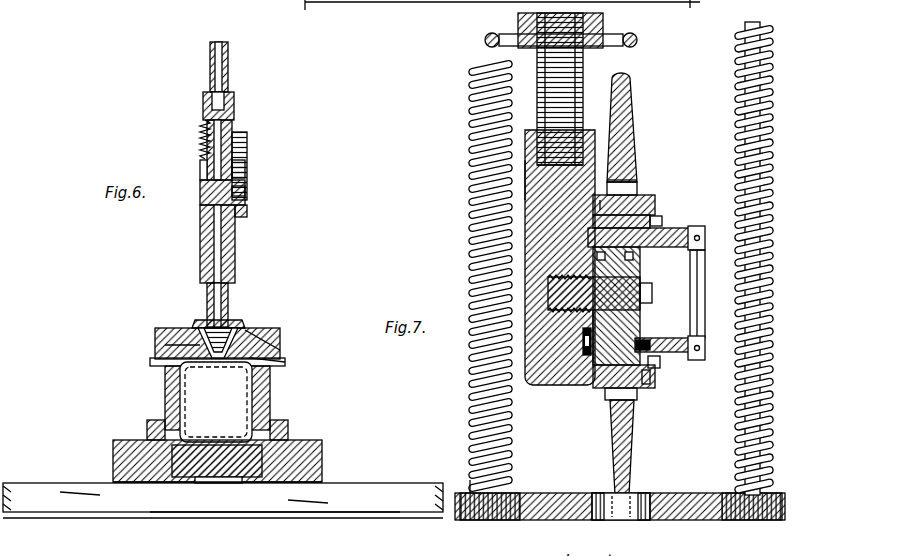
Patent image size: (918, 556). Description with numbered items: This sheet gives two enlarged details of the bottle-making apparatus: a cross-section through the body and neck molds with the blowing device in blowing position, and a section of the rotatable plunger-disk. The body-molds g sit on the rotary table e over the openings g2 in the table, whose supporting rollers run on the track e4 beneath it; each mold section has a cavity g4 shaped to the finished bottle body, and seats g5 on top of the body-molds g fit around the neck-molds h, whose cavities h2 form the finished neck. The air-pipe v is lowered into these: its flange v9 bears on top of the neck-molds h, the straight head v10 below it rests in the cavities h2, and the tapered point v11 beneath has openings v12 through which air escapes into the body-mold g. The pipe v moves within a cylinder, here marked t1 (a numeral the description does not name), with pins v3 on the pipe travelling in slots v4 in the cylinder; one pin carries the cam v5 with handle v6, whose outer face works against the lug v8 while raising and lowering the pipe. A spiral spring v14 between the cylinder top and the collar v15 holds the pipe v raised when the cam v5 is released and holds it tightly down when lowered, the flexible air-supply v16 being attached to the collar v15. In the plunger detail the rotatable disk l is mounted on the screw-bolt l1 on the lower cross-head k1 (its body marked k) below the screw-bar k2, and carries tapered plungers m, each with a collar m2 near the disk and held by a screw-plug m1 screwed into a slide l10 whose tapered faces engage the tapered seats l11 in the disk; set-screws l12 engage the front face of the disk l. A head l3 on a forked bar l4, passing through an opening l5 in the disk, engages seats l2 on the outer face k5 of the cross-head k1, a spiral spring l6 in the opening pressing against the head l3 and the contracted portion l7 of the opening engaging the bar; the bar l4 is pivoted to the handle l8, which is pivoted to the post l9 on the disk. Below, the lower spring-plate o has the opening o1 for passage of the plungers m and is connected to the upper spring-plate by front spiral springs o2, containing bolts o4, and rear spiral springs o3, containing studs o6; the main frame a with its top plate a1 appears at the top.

In FIG. 6, the flexible air-supply v16 is at (212, 52).
In FIG. 6, the collar v15 is at (235, 100).
In FIG. 6, the spiral spring v14 is at (203, 133).
In FIG. 6, the handle v6 is at (247, 143).
In FIG. 6, the slots v4 is at (203, 170).
In FIG. 6, the cam v5 is at (245, 192).
In FIG. 6, the pins v3 is at (247, 198).
In FIG. 6, the lug v8 is at (244, 217).
In FIG. 6, the valve body t1 is at (203, 256).
In FIG. 6, the air-pipe v is at (230, 297).
In FIG. 6, the straight face or head v10 is at (245, 325).
In FIG. 6, the neck-molds h is at (168, 330).
In FIG. 6, the flange v9 is at (200, 328).
In FIG. 6, the cavities h2 is at (282, 350).
In FIG. 6, the tapered point v11 is at (165, 347).
In FIG. 6, the seats g5 is at (285, 362).
In FIG. 6, the cavities g4 is at (268, 399).
In FIG. 6, the openings v12 is at (220, 370).
In FIG. 6, the body-molds g is at (118, 440).
In FIG. 6, the rotary table e is at (40, 483).
In FIG. 6, the openings g2 is at (248, 494).
In FIG. 6, the track e4 is at (268, 512).
In FIG. 7, the main frame a is at (506, 10).
In FIG. 7, the top plate a1 is at (309, 10).
In FIG. 7, the slide body k is at (560, 257).
In FIG. 7, the screw-bar k2 is at (584, 80).
In FIG. 7, the outer face k5 is at (596, 156).
In FIG. 7, the lower cross-head k1 is at (525, 240).
In FIG. 7, the tapered plungers m is at (632, 110).
In FIG. 7, the collar m2 is at (641, 167).
In FIG. 7, the screw-plugs m1 is at (656, 204).
In FIG. 7, the opening l5 is at (588, 200).
In FIG. 7, the head l3 is at (588, 240).
In FIG. 7, the rotatable disk l is at (616, 306).
In FIG. 7, the spiral spring l6 is at (604, 263).
In FIG. 7, the contracted portion l7 is at (631, 263).
In FIG. 7, the screw-bolt l1 is at (600, 293).
In FIG. 7, the seats l11 is at (612, 337).
In FIG. 7, the seats l2 is at (579, 341).
In FIG. 7, the forked bar l4 is at (682, 248).
In FIG. 7, the handle l8 is at (706, 292).
In FIG. 7, the post l9 is at (668, 338).
In FIG. 7, the set-screws l12 is at (661, 364).
In FIG. 7, the slides l10 is at (648, 388).
In FIG. 7, the lower spring-plate o is at (541, 500).
In FIG. 7, the opening o1 is at (616, 521).
In FIG. 7, the rear spiral springs o3 is at (470, 161).
In FIG. 7, the studs o6 is at (470, 398).
In FIG. 7, the bolts o4 is at (770, 166).
In FIG. 7, the front spiral springs o2 is at (740, 76).